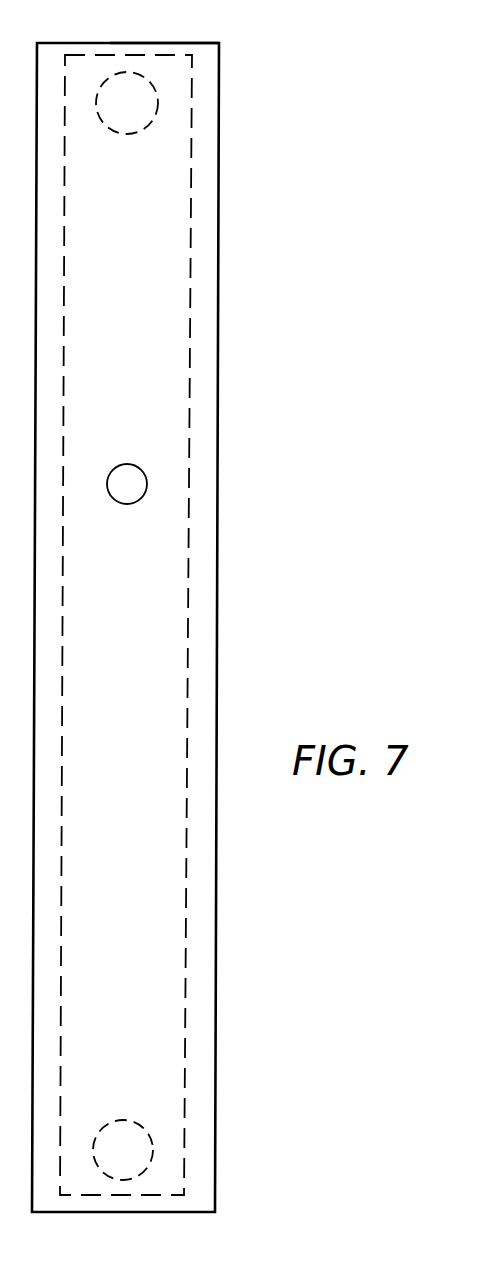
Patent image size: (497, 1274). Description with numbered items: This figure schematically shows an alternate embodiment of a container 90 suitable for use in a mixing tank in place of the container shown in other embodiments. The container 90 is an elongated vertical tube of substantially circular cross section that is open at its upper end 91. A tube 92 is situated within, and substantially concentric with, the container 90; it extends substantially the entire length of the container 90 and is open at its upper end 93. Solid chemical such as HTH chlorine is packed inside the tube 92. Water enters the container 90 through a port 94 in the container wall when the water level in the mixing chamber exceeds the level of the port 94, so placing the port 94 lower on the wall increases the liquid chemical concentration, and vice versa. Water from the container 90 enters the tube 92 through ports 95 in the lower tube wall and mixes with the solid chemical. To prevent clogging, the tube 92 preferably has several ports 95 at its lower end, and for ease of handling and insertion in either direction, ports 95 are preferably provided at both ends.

The container 90 is at (224, 309).
The upper end of container 91 is at (180, 43).
The tube 92 is at (189, 445).
The upper end of tube 93 is at (92, 53).
The port 94 is at (147, 484).
The ports 95 is at (157, 115).